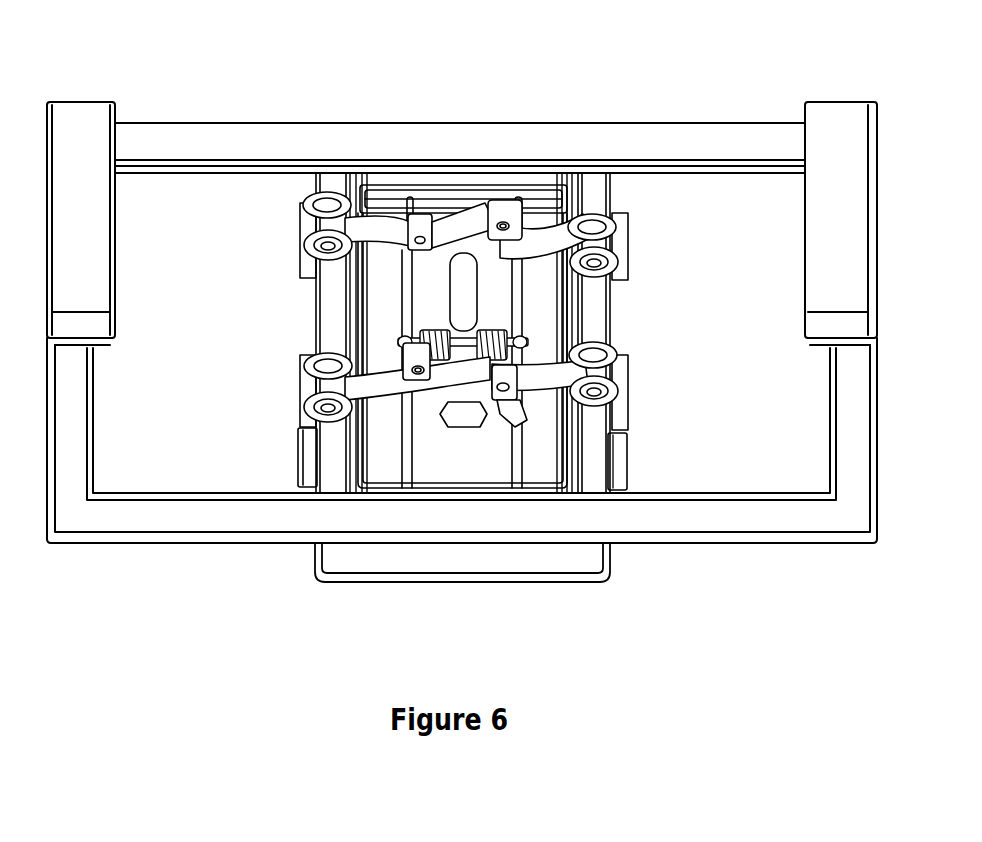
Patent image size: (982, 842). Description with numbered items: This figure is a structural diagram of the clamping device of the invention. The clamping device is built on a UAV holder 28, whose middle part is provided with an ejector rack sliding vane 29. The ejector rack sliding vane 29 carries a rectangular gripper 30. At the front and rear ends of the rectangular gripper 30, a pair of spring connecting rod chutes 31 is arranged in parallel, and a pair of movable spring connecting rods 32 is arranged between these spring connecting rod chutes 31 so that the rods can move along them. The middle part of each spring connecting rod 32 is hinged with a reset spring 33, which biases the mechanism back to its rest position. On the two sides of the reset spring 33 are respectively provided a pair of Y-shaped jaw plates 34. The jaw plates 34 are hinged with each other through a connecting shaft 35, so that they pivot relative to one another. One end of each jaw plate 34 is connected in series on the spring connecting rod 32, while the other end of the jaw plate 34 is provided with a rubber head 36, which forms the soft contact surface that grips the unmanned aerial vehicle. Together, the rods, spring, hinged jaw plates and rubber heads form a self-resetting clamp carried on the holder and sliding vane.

The UAV holder 28 is at (90, 168).
The ejector rack sliding vane 29 is at (627, 458).
The rectangular gripper 30 is at (333, 475).
The spring connecting rod chute 31 is at (483, 193).
The spring connecting rod 32 is at (517, 450).
The reset spring 33 is at (498, 330).
The jaw plate 34 is at (510, 257).
The connecting shaft 35 is at (352, 427).
The rubber head 36 is at (302, 200).